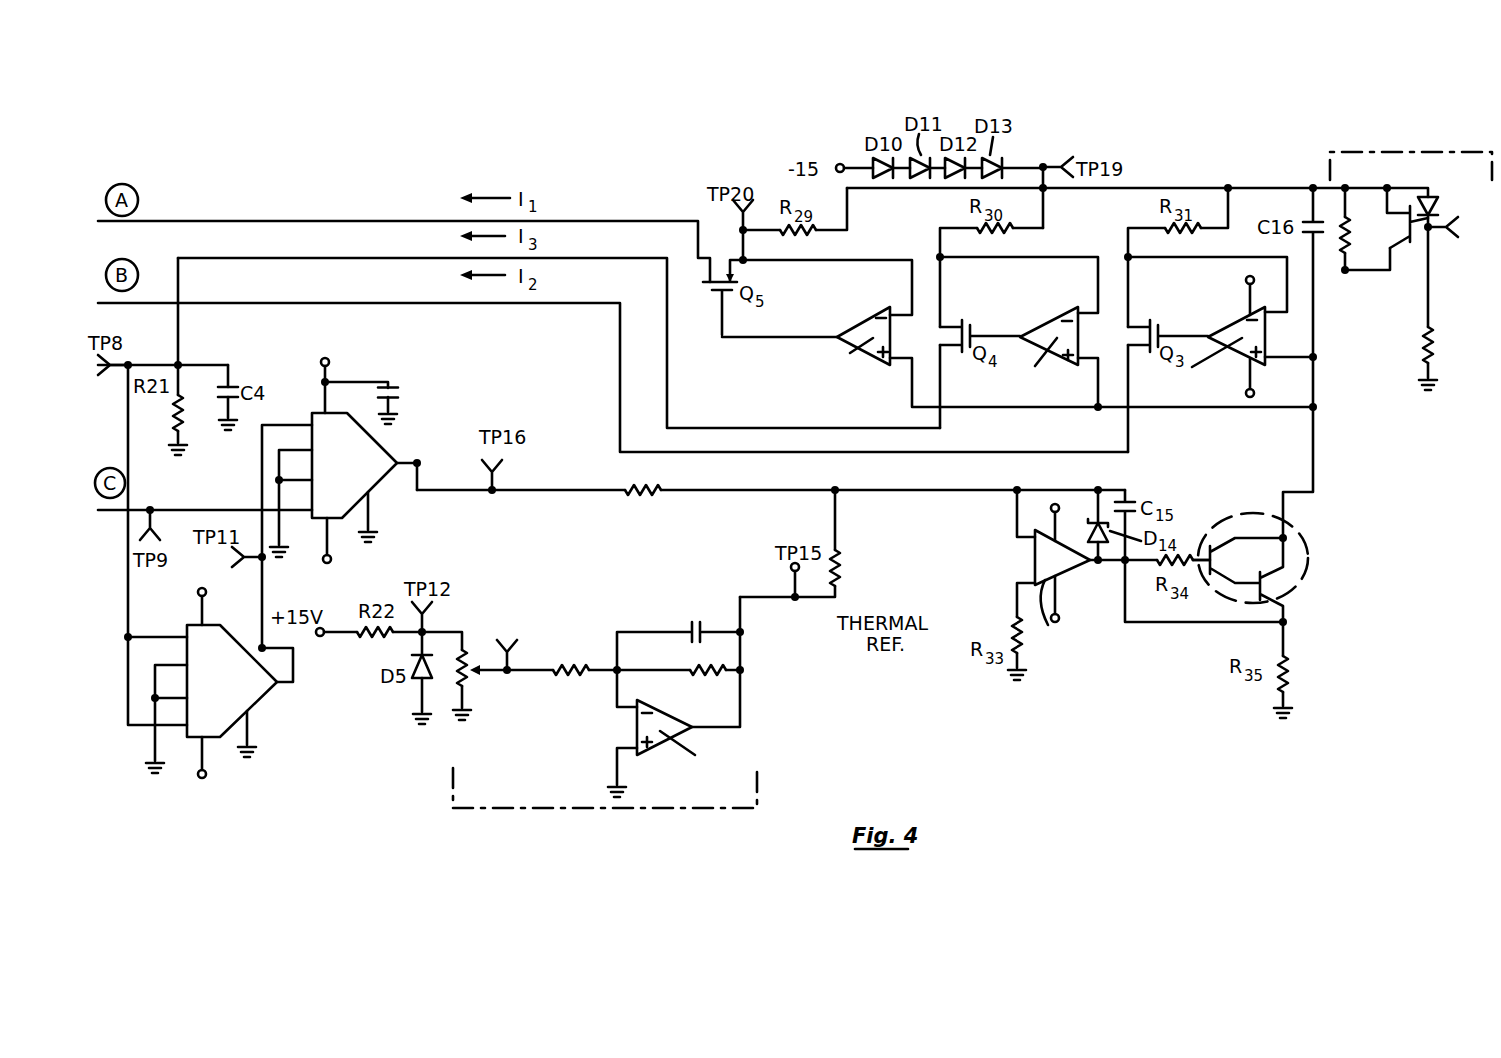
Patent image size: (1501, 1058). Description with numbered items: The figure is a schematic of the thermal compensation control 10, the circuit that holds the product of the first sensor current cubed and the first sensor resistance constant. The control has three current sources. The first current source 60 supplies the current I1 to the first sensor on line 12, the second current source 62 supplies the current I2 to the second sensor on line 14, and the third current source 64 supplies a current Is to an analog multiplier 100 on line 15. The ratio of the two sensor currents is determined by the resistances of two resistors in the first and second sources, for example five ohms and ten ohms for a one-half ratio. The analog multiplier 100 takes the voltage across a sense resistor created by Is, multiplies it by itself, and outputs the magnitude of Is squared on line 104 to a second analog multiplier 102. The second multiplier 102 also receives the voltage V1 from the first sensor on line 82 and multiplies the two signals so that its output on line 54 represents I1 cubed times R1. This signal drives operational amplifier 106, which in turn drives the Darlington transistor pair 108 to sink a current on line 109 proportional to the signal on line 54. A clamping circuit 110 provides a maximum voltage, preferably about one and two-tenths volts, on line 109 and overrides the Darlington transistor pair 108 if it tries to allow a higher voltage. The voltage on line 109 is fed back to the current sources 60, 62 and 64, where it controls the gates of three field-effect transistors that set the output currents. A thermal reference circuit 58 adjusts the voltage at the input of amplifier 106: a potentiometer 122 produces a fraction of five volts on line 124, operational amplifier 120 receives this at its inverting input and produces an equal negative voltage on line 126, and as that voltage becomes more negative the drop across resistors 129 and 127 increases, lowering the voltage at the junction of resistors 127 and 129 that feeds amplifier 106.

The thermal compensation control 10 is at (634, 164).
The line 12 is at (382, 221).
The line 14 is at (382, 303).
The line 15 is at (382, 258).
The line 54 is at (582, 493).
The thermal reference circuit 58 is at (607, 808).
The first current source 60 is at (875, 314).
The second current source 62 is at (1245, 320).
The third current source 64 is at (1065, 313).
The line 82 is at (110, 513).
The analog multiplier 100 is at (253, 695).
The second analog multiplier 102 is at (320, 408).
The line 104 is at (262, 474).
The operational amplifier 106 is at (1078, 571).
The Darlington transistor pair 108 is at (1311, 548).
The line 109 is at (1314, 463).
The clamping circuit 110 is at (1412, 152).
The operational amplifier 120 is at (637, 723).
The potentiometer 122 is at (487, 605).
The line 124 is at (538, 676).
The line 126 is at (742, 648).
The resistor 127 is at (835, 557).
The resistor 129 is at (660, 496).